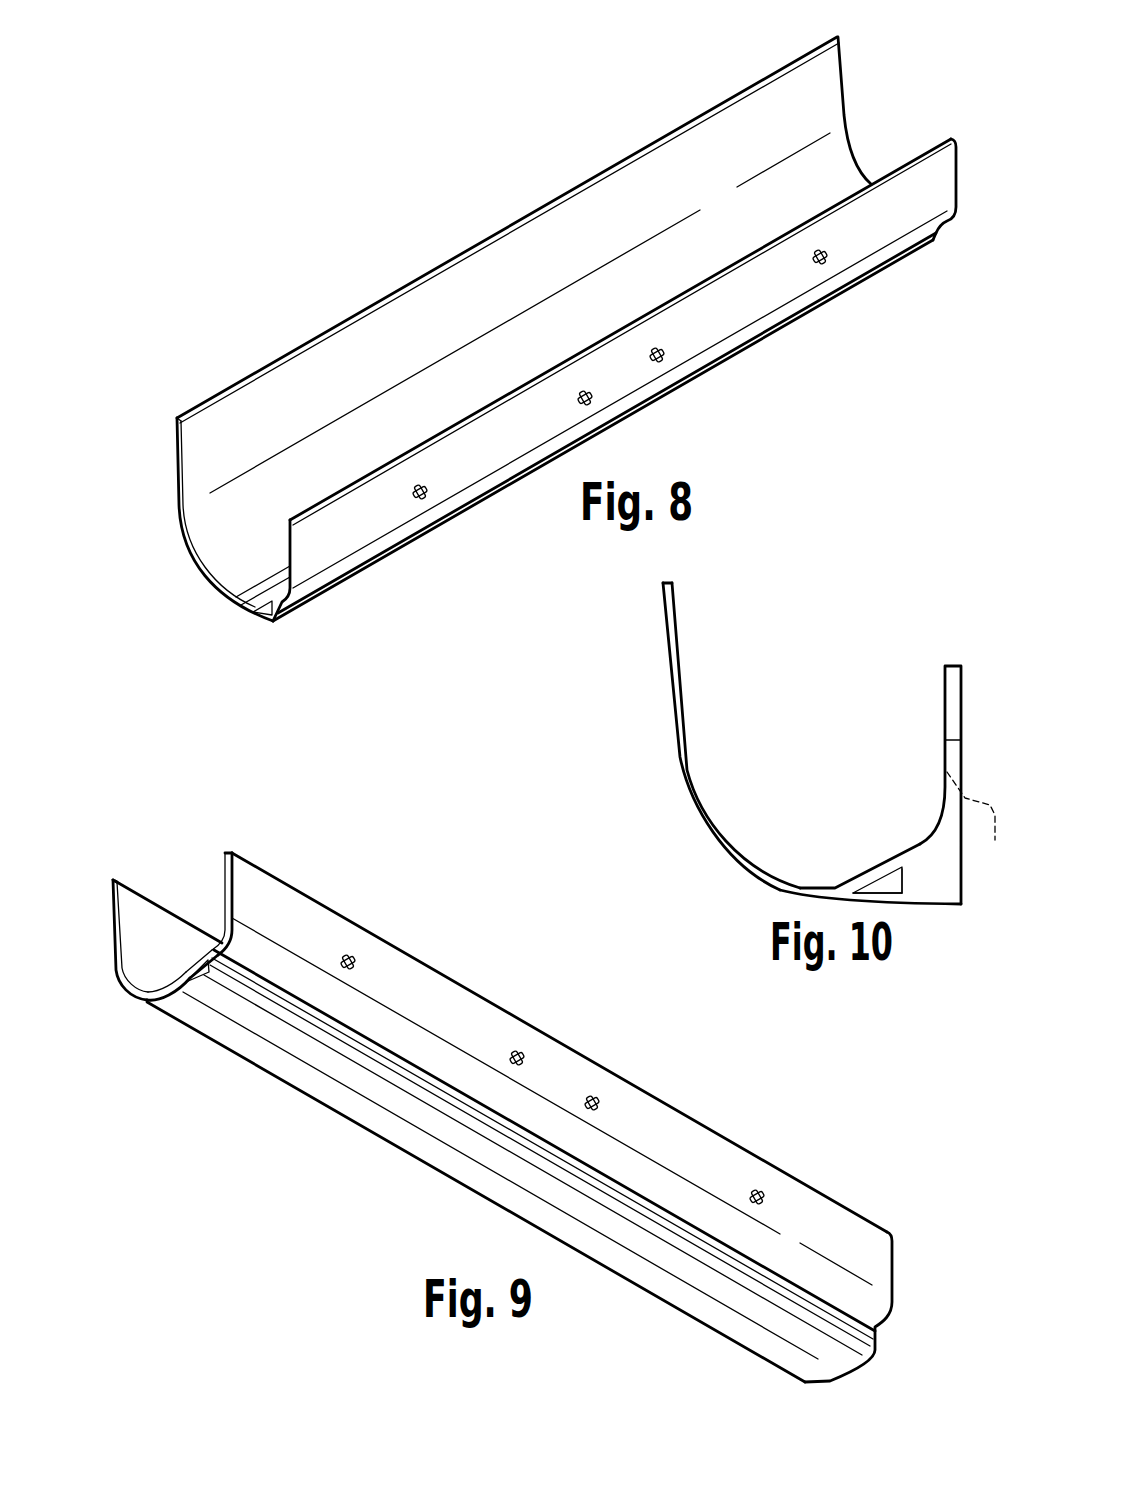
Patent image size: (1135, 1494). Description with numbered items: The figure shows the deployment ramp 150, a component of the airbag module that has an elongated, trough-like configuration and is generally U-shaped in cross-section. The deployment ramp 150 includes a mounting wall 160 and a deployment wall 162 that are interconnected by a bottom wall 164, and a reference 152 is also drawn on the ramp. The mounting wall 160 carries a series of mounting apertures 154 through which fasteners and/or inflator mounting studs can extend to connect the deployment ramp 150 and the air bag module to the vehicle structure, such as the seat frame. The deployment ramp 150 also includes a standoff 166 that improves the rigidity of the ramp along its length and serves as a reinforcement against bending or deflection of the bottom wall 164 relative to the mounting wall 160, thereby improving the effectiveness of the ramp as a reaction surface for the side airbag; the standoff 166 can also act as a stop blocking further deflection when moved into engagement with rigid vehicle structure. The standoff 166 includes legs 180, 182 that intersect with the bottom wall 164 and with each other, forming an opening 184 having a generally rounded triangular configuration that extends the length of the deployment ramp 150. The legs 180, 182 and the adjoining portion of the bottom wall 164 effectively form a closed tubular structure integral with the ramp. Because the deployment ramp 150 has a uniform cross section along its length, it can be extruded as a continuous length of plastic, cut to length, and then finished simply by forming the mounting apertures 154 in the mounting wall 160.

In FIG. 8, the deployment ramp 150 is at (535, 364).
In FIG. 10, the deployment ramp 150 is at (793, 750).
In FIG. 9, the deployment ramp 150 is at (497, 1085).
In FIG. 8, the channel body 152 is at (535, 364).
In FIG. 10, the channel body 152 is at (793, 774).
In FIG. 9, the channel body 152 is at (497, 1085).
In FIG. 8, the mounting apertures 154 is at (822, 262).
In FIG. 10, the mounting apertures 154 is at (976, 818).
In FIG. 9, the mounting apertures 154 is at (515, 1052).
In FIG. 8, the mounting wall 160 is at (710, 312).
In FIG. 10, the mounting wall 160 is at (953, 692).
In FIG. 9, the mounting wall 160 is at (813, 1218).
In FIG. 8, the deployment wall 162 is at (638, 192).
In FIG. 10, the deployment wall 162 is at (675, 672).
In FIG. 9, the deployment wall 162 is at (145, 925).
In FIG. 8, the bottom wall 164 is at (237, 552).
In FIG. 10, the bottom wall 164 is at (787, 892).
In FIG. 9, the bottom wall 164 is at (385, 1097).
In FIG. 8, the standoff 166 is at (268, 622).
In FIG. 10, the standoff 166 is at (924, 913).
In FIG. 9, the standoff 166 is at (237, 990).
In FIG. 10, the leg 180 is at (887, 885).
In FIG. 10, the leg 182 is at (913, 873).
In FIG. 10, the opening 184 is at (877, 900).